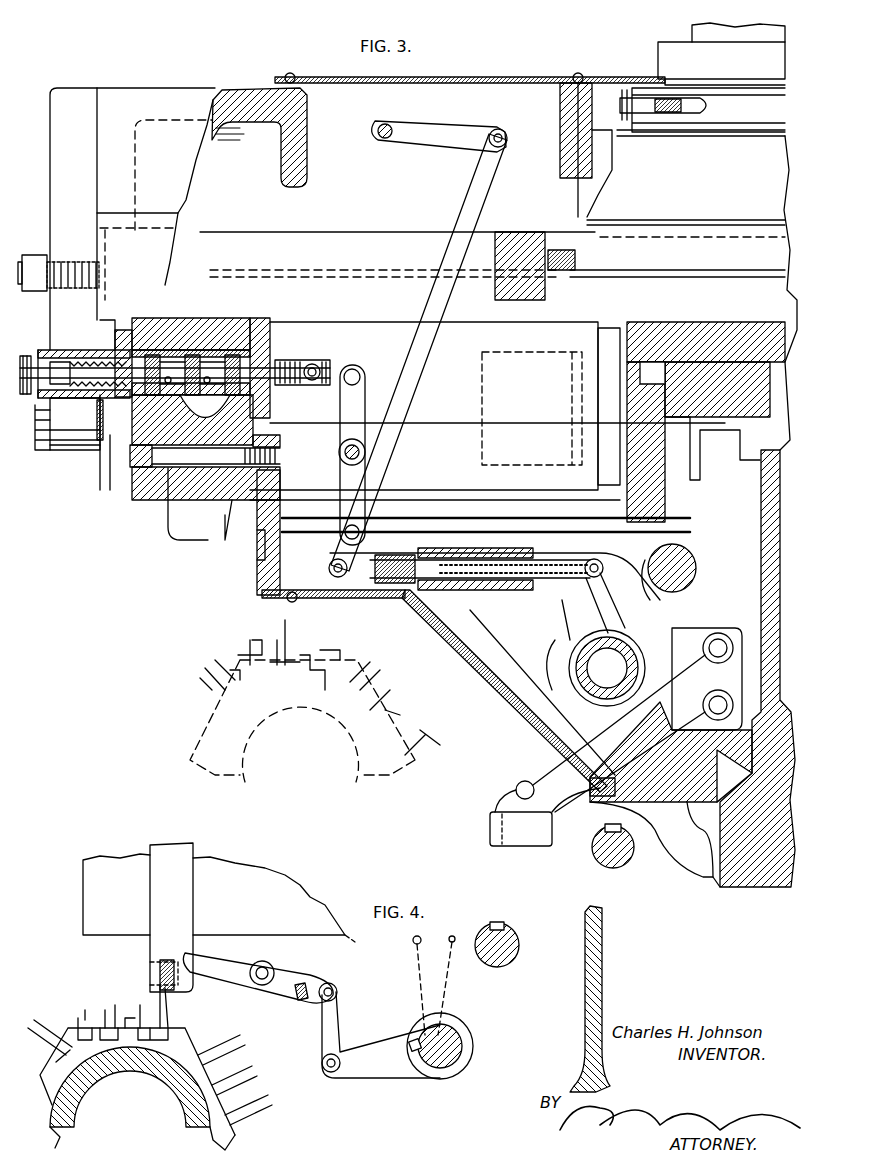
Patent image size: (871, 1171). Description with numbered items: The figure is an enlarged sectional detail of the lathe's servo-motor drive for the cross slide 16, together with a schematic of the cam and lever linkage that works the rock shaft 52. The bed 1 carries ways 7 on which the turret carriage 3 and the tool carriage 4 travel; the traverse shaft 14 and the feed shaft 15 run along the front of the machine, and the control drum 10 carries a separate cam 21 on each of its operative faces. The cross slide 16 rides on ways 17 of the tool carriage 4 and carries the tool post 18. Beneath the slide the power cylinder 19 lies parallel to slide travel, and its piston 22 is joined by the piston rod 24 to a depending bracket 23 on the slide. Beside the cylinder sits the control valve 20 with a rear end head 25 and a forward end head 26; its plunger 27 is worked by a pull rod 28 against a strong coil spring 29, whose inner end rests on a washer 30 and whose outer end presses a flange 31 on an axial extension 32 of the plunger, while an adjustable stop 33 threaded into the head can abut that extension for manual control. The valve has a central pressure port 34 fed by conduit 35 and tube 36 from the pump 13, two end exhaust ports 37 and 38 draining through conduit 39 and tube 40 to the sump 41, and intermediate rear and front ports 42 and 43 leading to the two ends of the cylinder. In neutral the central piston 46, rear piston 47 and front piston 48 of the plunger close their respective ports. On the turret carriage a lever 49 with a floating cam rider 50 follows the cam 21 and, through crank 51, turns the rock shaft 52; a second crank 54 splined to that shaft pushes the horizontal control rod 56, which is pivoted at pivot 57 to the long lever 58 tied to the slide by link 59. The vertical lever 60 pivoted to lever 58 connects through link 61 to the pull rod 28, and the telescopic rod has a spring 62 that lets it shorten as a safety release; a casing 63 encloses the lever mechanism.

In FIG. 3, the bed 1 is at (780, 522).
In FIG. 4, the bed 1 is at (585, 965).
In FIG. 4, the turret carriage 3 is at (100, 865).
In FIG. 3, the tool carriage 4 is at (735, 300).
In FIG. 3, the ways 7 is at (700, 322).
In FIG. 3, the control drum 10 is at (232, 656).
In FIG. 4, the control drum 10 is at (68, 1028).
In FIG. 3, the variable displacement hydraulic pump 13 is at (522, 780).
In FIG. 3, the traverse shaft 14 is at (592, 852).
In FIG. 3, the feed shaft 15 is at (684, 545).
In FIG. 4, the feed shaft 15 is at (515, 938).
In FIG. 3, the cross slide 16 is at (150, 88).
In FIG. 3, the ways 17 is at (548, 250).
In FIG. 3, the tool post 18 is at (692, 28).
In FIG. 3, the power cylinder 19 is at (470, 357).
In FIG. 3, the control valve 20 is at (140, 318).
In FIG. 3, the cam 21 is at (205, 672).
In FIG. 4, the cam 21 is at (44, 1024).
In FIG. 3, the piston 22 is at (556, 357).
In FIG. 3, the depending bracket 23 is at (55, 308).
In FIG. 3, the piston rod 24 is at (85, 452).
In FIG. 3, the rear end head 25 is at (270, 330).
In FIG. 3, the forward end head 26 is at (117, 335).
In FIG. 3, the plunger 27 is at (232, 360).
In FIG. 3, the pull rod 28 is at (272, 368).
In FIG. 3, the coil spring 29 is at (80, 390).
In FIG. 3, the washer 30 is at (112, 402).
In FIG. 3, the flange 31 is at (62, 360).
In FIG. 3, the axial extension 32 is at (88, 355).
In FIG. 3, the adjustable stop 33 is at (26, 356).
In FIG. 3, the central port 34 is at (170, 445).
In FIG. 3, the conduit 35 is at (516, 423).
In FIG. 3, the tube 36 is at (722, 636).
In FIG. 3, the end port 37 is at (262, 395).
In FIG. 3, the end port 38 is at (128, 420).
In FIG. 3, the conduit 39 is at (205, 532).
In FIG. 3, the tube 40 is at (714, 720).
In FIG. 3, the sump 41 is at (490, 828).
In FIG. 3, the rear port 42 is at (200, 392).
In FIG. 3, the front port 43 is at (152, 392).
In FIG. 3, the central piston 46 is at (192, 355).
In FIG. 3, the rear piston 47 is at (244, 366).
In FIG. 3, the front piston 48 is at (152, 355).
In FIG. 4, the lever 49 is at (228, 958).
In FIG. 4, the floating cam rider 50 is at (150, 955).
In FIG. 4, the crank 51 is at (380, 1078).
In FIG. 3, the rock shaft 52 is at (590, 662).
In FIG. 4, the rock shaft 52 is at (462, 1035).
In FIG. 3, the crank 54 is at (580, 612).
In FIG. 4, the crank 54 is at (412, 960).
In FIG. 3, the control rod 56 is at (382, 598).
In FIG. 3, the pivot 57 is at (330, 565).
In FIG. 3, the long lever 58 is at (425, 388).
In FIG. 3, the link 59 is at (418, 147).
In FIG. 3, the vertical lever 60 is at (340, 436).
In FIG. 3, the link 61 is at (348, 368).
In FIG. 3, the spring 62 is at (472, 590).
In FIG. 3, the casing 63 is at (458, 650).